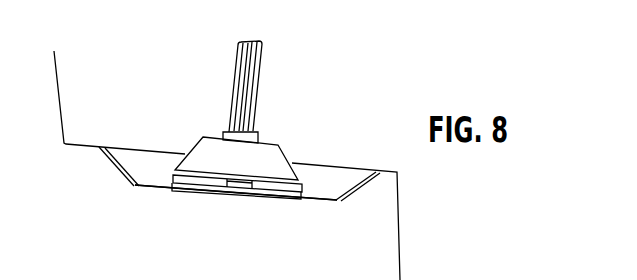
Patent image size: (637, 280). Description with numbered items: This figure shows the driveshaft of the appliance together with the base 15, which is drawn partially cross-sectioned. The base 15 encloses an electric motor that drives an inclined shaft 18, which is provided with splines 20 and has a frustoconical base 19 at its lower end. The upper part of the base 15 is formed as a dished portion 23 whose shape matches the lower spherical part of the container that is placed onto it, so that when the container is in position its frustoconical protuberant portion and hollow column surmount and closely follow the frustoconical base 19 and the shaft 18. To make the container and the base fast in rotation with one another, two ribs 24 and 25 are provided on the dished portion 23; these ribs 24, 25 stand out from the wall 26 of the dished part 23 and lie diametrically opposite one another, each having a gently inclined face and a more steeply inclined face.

The base 15 is at (398, 253).
The inclined shaft 18 is at (230, 111).
The frustoconical base 19 is at (279, 155).
The splines 20 is at (233, 80).
The dished portion 23 is at (153, 185).
The rib 24 is at (121, 174).
The rib 25 is at (348, 194).
The wall 26 is at (342, 180).